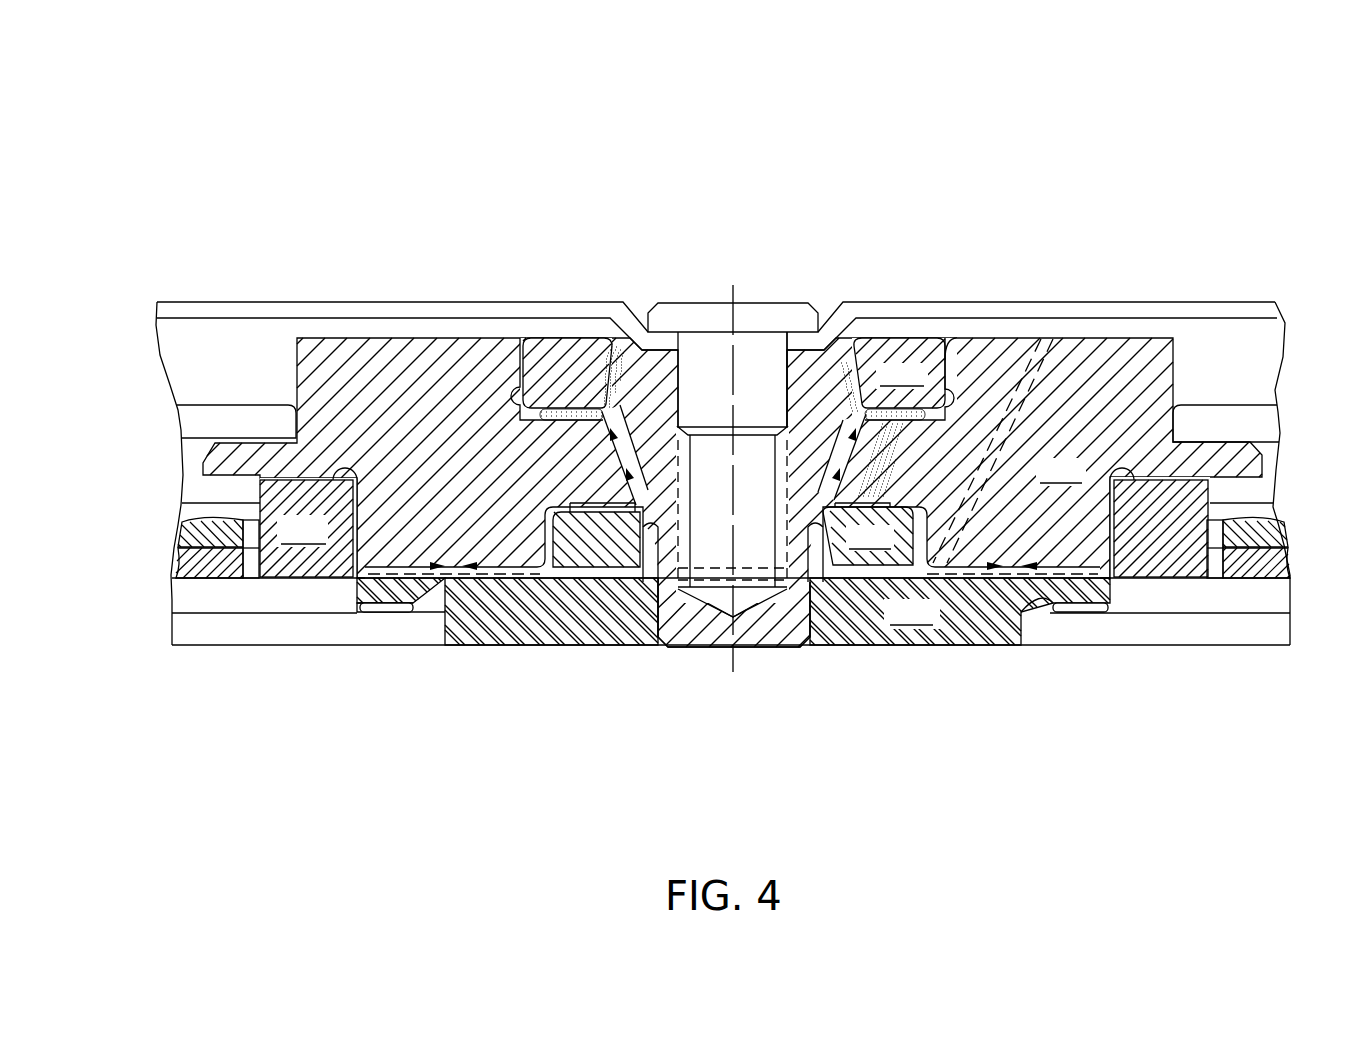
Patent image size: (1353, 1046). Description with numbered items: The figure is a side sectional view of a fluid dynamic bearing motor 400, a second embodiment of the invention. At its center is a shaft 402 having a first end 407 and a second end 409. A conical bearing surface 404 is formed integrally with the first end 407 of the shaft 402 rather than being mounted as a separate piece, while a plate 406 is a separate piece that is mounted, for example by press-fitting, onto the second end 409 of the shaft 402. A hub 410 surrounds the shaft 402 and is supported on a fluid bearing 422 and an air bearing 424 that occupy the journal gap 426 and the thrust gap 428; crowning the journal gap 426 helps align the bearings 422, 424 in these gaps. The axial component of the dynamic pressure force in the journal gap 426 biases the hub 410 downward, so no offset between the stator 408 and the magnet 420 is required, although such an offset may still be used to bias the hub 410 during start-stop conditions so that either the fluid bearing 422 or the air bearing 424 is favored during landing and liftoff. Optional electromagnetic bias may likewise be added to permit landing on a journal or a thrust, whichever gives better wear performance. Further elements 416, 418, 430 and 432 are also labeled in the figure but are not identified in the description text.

The motor 400 is at (998, 188).
The shaft 402 is at (840, 458).
The conical bearing surface 404 is at (862, 412).
The plate 406 is at (731, 611).
The first end 407 is at (807, 380).
The stator 408 is at (180, 521).
The second end 409 is at (750, 630).
The hub 410 is at (1009, 450).
The upper seal block 416 is at (899, 417).
The lower seal block 418 is at (732, 542).
The magnet 420 is at (735, 523).
The fluid bearing 422 is at (606, 452).
The air bearing 424 is at (447, 608).
The journal gap 426 is at (640, 422).
The thrust gap 428 is at (383, 595).
The upper seal 430 is at (617, 342).
The elastomer strip 432 is at (604, 422).